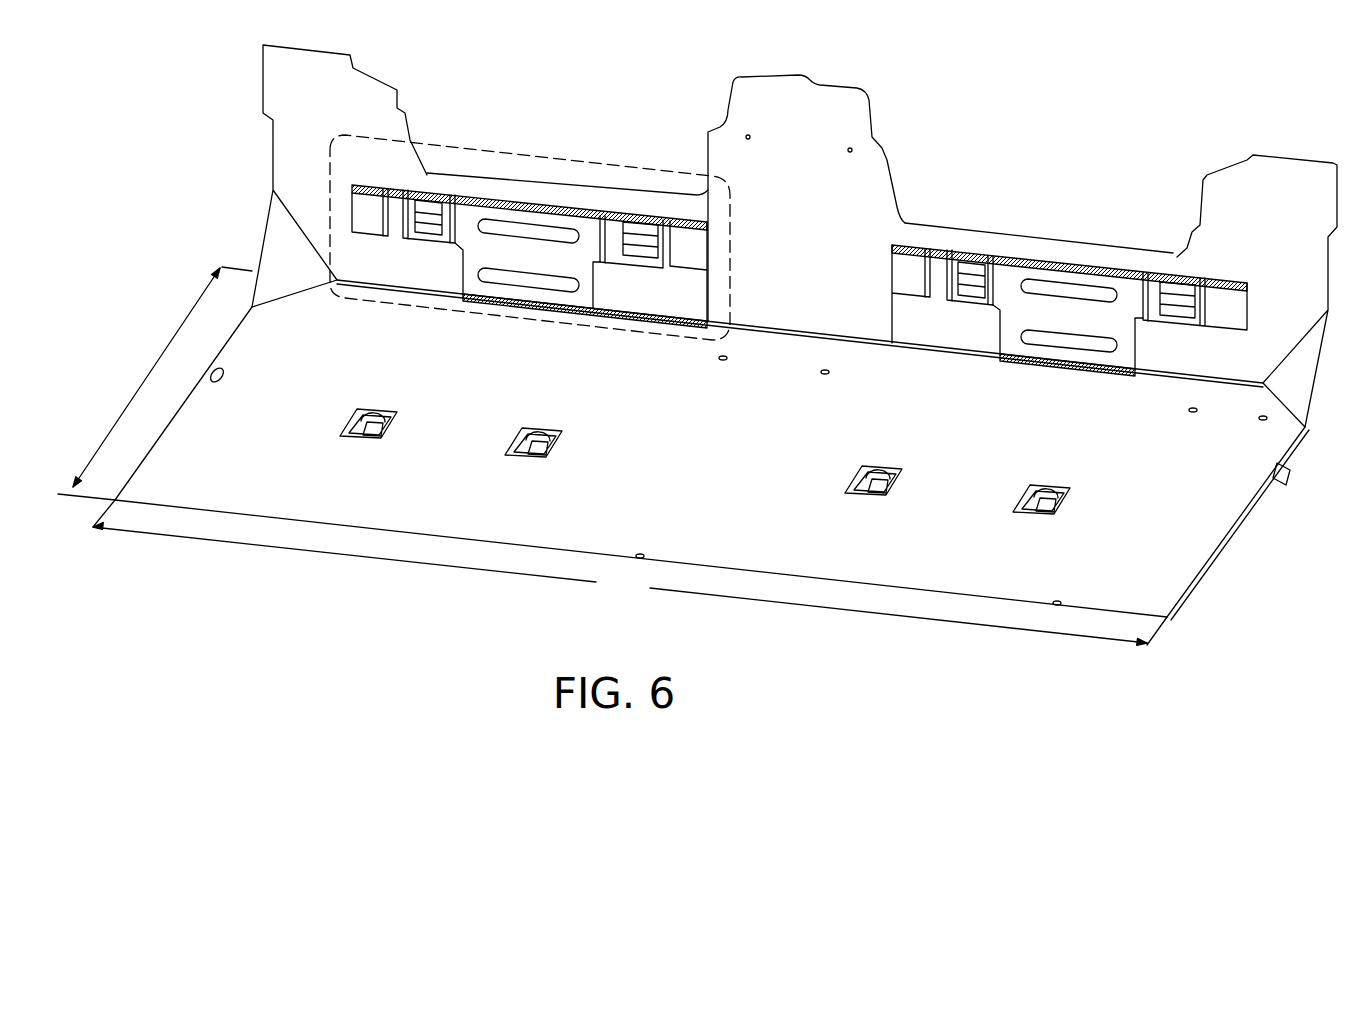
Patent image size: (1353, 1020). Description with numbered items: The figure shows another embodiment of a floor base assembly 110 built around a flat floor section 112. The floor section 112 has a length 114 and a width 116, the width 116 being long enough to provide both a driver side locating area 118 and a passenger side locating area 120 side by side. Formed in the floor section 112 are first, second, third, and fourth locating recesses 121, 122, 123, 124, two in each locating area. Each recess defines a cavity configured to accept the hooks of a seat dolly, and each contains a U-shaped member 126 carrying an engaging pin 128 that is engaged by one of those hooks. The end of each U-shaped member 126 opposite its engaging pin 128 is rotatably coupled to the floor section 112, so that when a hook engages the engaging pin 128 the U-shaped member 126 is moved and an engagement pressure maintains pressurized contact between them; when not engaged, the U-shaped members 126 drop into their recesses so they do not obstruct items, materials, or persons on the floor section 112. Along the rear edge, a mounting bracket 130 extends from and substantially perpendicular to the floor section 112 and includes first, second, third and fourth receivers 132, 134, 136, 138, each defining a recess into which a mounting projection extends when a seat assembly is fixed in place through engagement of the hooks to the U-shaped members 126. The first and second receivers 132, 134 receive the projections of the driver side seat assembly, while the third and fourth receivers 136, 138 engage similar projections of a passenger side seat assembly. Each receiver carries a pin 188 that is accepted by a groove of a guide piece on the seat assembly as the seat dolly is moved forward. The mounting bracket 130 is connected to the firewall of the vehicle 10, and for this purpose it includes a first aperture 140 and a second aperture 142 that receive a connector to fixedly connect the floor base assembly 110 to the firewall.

The vehicle 10 is at (520, 152).
The floor base assembly 110 is at (712, 478).
The floor section 112 is at (733, 565).
The length 114 is at (155, 383).
The width 116 is at (630, 572).
The driver side locating area 118 is at (440, 515).
The passenger side locating area 120 is at (960, 569).
The first locating recess 121 is at (386, 408).
The second locating recess 122 is at (555, 426).
The third locating recess 123 is at (893, 465).
The fourth locating recess 124 is at (1063, 484).
The U-shaped member 126 is at (352, 415).
The engaging pin 128 is at (367, 441).
The mounting bracket 130 is at (292, 146).
The first receiver 132 is at (428, 175).
The second receiver 134 is at (650, 196).
The third receiver 136 is at (980, 235).
The fourth receiver 138 is at (1176, 257).
The first aperture 140 is at (750, 140).
The second aperture 142 is at (850, 153).
The pin 188 is at (432, 228).